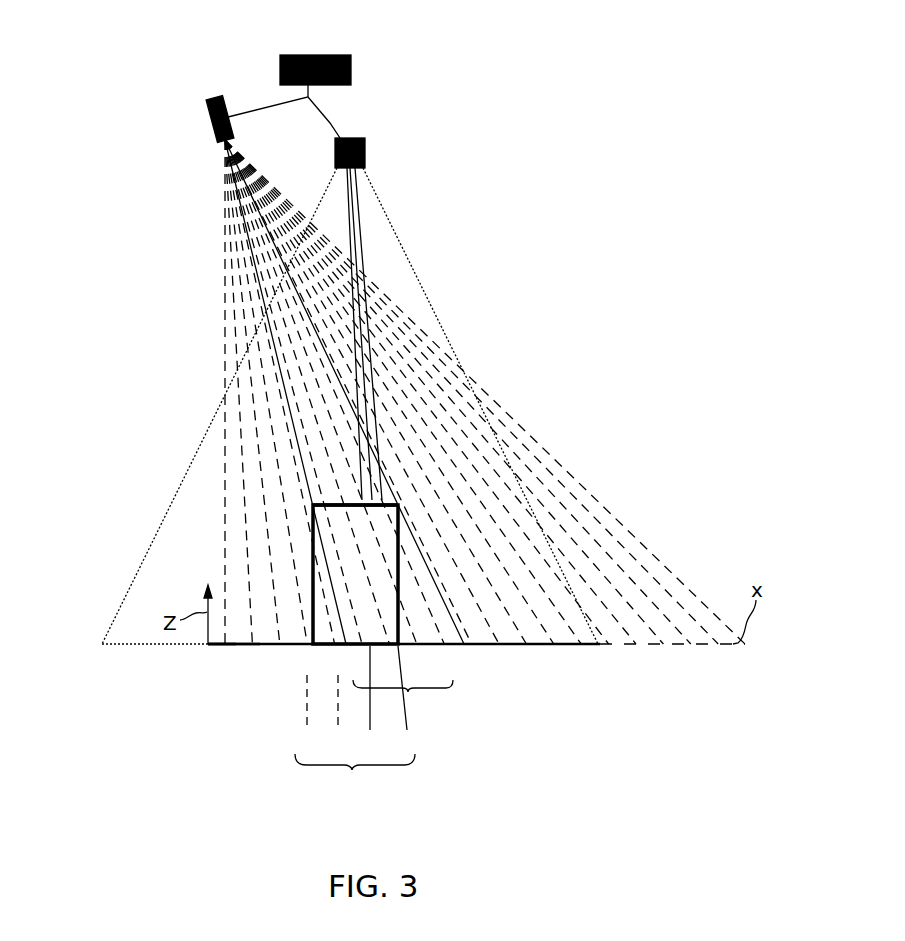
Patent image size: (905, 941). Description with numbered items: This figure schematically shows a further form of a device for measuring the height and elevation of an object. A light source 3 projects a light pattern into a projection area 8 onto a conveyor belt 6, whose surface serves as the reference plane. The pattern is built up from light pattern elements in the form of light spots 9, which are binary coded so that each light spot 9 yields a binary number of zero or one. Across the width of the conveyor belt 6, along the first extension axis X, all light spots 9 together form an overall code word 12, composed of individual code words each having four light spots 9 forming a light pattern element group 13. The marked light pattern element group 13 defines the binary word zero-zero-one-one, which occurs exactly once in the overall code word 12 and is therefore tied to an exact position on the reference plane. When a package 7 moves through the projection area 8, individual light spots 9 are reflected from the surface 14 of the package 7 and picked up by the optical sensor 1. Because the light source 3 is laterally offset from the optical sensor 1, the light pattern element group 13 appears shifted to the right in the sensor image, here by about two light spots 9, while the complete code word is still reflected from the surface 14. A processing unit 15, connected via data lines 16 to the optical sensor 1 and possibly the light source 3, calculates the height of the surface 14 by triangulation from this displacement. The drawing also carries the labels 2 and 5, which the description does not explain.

The optical sensor 1 is at (367, 150).
The light cone 2 is at (385, 215).
The light source 3 is at (215, 128).
The reference plane 5 is at (240, 643).
The conveyor belt 6 is at (508, 648).
The package 7 is at (400, 578).
The projection area 8 is at (225, 228).
The light spots 9 is at (222, 650).
The overall code word 12 is at (730, 661).
The light pattern element group 13 is at (374, 725).
The surface 14 is at (393, 500).
The processing unit 15 is at (333, 55).
The data lines 16 is at (330, 123).